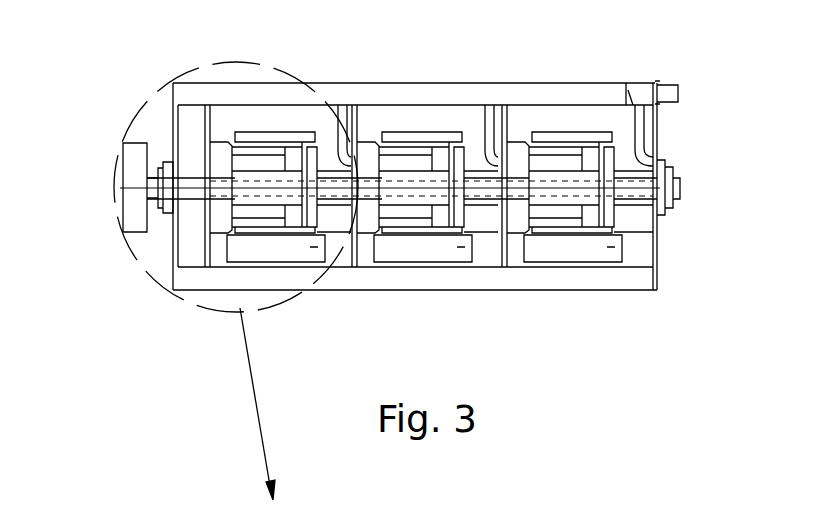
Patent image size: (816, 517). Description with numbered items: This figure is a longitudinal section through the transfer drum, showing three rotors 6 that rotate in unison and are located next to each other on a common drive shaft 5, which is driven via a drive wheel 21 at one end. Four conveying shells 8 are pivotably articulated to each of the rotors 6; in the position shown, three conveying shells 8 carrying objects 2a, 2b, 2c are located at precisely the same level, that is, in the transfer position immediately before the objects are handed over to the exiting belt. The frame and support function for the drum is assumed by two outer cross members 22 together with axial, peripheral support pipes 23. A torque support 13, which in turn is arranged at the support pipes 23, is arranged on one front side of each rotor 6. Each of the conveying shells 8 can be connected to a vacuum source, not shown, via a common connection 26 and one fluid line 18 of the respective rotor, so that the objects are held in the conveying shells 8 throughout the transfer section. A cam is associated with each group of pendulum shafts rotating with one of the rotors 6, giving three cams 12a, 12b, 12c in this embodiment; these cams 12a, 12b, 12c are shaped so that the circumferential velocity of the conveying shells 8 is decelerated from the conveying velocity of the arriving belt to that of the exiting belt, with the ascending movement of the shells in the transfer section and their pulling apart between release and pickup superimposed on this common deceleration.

The object 2a is at (233, 252).
The object 2b is at (380, 252).
The object 2c is at (530, 252).
The common drive shaft 5 is at (675, 185).
The rotor 6 is at (272, 195).
The conveying shell 8 is at (557, 135).
The cam 12a is at (213, 165).
The cam 12b is at (360, 165).
The cam 12c is at (510, 165).
The torque support 13 is at (203, 247).
The fluid line 18 is at (640, 108).
The drive wheel 21 is at (135, 210).
The outer cross member 22 is at (172, 275).
The support pipe 23 is at (619, 89).
The common connection 26 is at (670, 92).